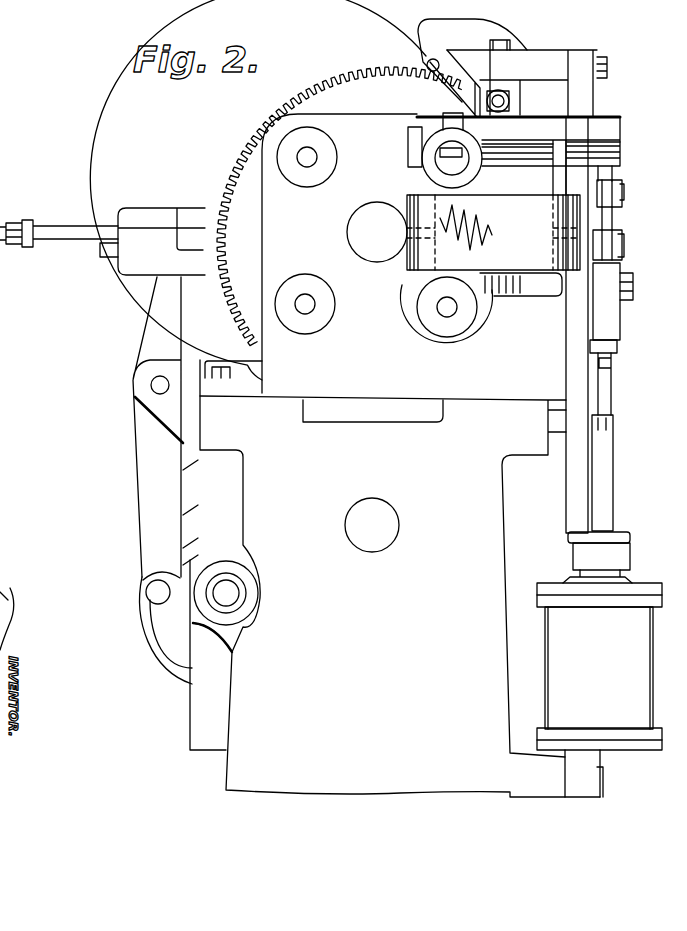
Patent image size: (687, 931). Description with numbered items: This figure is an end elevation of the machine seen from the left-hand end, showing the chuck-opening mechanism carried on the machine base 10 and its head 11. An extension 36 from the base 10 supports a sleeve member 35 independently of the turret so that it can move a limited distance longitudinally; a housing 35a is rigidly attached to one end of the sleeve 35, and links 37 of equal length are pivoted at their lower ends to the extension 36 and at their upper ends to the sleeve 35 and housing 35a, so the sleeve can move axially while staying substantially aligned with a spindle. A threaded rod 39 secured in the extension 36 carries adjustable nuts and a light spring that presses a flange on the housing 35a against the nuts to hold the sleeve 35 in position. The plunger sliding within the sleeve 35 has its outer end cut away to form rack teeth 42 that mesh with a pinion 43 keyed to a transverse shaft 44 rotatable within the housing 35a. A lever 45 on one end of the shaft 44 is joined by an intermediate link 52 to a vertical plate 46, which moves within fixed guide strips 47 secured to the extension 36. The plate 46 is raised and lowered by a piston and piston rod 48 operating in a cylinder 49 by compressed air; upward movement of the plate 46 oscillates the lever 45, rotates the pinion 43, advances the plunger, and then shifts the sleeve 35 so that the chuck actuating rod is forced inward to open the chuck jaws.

The machine base 10 is at (300, 455).
The head 11 is at (333, 63).
The sleeve member 35 is at (421, 141).
The housing 35a is at (471, 171).
The extension 36 is at (530, 297).
The links 37 is at (493, 232).
The threaded rod 39 is at (511, 97).
The rack teeth 42 is at (441, 164).
The pinion 43 is at (442, 113).
The transverse shaft 44 is at (622, 138).
The lever 45 is at (616, 171).
The vertical plate 46 is at (566, 479).
The guide strips 47 is at (585, 96).
The piston rod 48 is at (608, 468).
The cylinder 49 is at (599, 664).
The intermediate link 52 is at (614, 216).